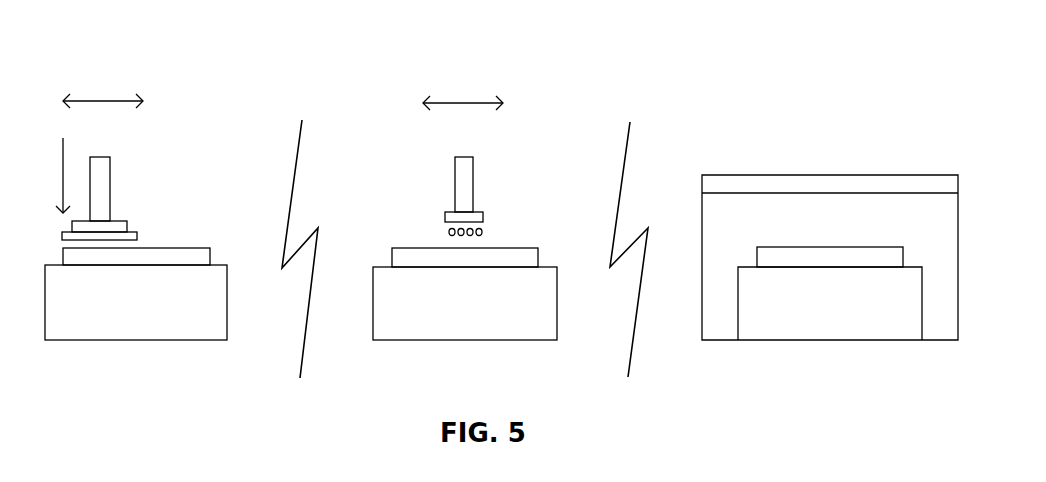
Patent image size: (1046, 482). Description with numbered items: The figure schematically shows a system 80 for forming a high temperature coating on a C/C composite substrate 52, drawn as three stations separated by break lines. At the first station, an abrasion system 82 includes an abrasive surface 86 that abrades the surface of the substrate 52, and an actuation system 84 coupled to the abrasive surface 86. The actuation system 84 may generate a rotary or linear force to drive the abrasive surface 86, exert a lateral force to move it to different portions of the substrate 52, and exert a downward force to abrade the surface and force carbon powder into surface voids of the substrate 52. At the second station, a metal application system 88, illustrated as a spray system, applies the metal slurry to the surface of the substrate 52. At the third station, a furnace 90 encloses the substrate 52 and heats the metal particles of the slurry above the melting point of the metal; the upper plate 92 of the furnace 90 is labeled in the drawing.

The system 80 is at (638, 40).
The abrasion system 82 is at (152, 152).
The actuation system 84 is at (100, 157).
The abrasive surface 86 is at (127, 231).
The metal application system 88 is at (465, 155).
The furnace 90 is at (830, 221).
The top plate 92 is at (885, 175).
The substrate 52 is at (173, 247).